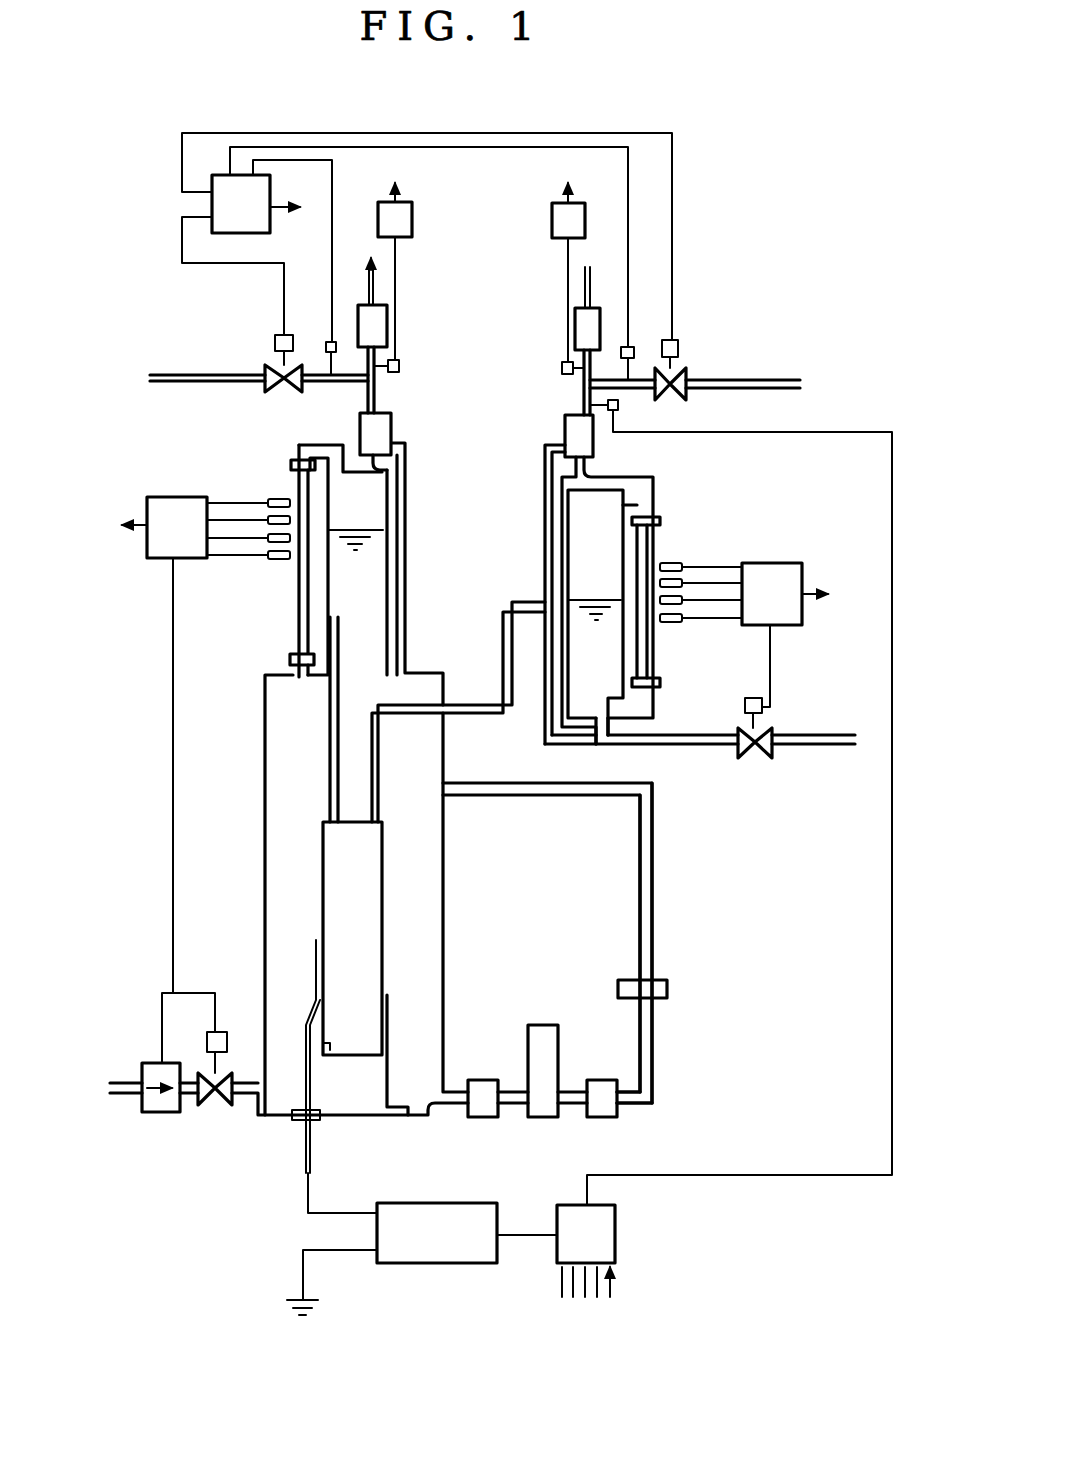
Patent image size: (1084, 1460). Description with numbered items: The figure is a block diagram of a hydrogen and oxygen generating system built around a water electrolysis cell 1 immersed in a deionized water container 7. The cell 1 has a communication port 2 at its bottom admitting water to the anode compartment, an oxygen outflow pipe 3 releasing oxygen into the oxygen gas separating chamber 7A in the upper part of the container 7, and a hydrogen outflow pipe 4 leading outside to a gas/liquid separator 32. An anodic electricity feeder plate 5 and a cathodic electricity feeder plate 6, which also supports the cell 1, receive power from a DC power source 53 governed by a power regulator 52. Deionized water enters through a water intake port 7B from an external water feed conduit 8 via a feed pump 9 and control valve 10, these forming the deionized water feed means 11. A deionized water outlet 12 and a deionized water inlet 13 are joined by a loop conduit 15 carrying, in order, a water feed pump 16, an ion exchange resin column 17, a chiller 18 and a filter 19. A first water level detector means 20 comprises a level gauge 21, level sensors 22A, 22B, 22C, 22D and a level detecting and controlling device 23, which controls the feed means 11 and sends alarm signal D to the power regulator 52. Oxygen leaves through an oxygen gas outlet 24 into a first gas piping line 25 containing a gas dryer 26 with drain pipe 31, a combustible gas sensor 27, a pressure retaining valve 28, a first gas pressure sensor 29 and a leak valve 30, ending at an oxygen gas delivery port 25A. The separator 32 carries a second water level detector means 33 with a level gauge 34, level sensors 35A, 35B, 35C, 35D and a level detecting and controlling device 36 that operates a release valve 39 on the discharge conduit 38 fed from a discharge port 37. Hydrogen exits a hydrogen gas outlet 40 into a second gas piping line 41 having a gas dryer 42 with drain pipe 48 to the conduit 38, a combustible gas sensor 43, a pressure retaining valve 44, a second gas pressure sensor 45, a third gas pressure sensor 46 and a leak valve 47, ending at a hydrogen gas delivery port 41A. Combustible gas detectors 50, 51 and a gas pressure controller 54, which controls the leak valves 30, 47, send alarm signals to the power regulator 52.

The water electrolysis cell 1 is at (360, 936).
The communication port 2 is at (324, 1050).
The oxygen outflow pipe 3 is at (330, 770).
The hydrogen outflow pipe 4 is at (380, 770).
The anodic electricity feeder plate 5 is at (310, 1003).
The cathodic electricity feeder plate 6 is at (388, 1068).
The deionized water container 7 is at (444, 925).
The oxygen gas separating chamber 7A is at (377, 578).
The water intake port 7B is at (258, 1105).
The external water feed conduit 8 is at (108, 1088).
The feed pump 9 is at (165, 1118).
The control valve 10 is at (205, 1105).
The deionized water feed means 11 is at (128, 1125).
The deionized water outlet 12 is at (428, 1118).
The deionized water inlet 13 is at (444, 785).
The loop conduit 15 is at (653, 925).
The water feed pump 16 is at (483, 1118).
The ion exchange resin column 17 is at (545, 1118).
The chiller 18 is at (602, 1118).
The filter 19 is at (667, 988).
The first water level detector means 20 is at (178, 484).
The level gauge 21 is at (300, 612).
The level sensor 22A is at (276, 497).
The level sensor 22B is at (268, 516).
The level sensor 22C is at (270, 540).
The level sensor 22D is at (276, 560).
The level detecting and controlling device 23 is at (180, 542).
The oxygen gas outlet 24 is at (395, 482).
The first gas piping line 25 is at (382, 385).
The oxygen gas delivery port 25A is at (355, 268).
The gas dryer 26 is at (392, 428).
The combustible gas sensor 27 is at (400, 362).
The pressure retaining valve 28 is at (380, 322).
The first gas pressure sensor 29 is at (330, 340).
The leak valve 30 is at (266, 368).
The drain pipe 31 is at (406, 526).
The gas/liquid separator 32 is at (608, 488).
The second water level detector means 33 is at (778, 556).
The level gauge 34 is at (648, 545).
The level sensor 35A is at (666, 562).
The level sensor 35B is at (682, 583).
The level sensor 35C is at (682, 603).
The level sensor 35D is at (668, 623).
The level detecting and controlling device 36 is at (780, 612).
The discharge port 37 is at (600, 737).
The discharge conduit 38 is at (672, 746).
The release valve 39 is at (758, 752).
The hydrogen gas outlet 40 is at (590, 482).
The second gas piping line 41 is at (580, 392).
The hydrogen gas delivery port 41A is at (588, 270).
The gas dryer 42 is at (564, 432).
The combustible gas sensor 43 is at (561, 366).
The pressure retaining valve 44 is at (600, 326).
The second gas pressure sensor 45 is at (634, 350).
The third gas pressure sensor 46 is at (618, 406).
The leak valve 47 is at (686, 372).
The drain pipe 48 is at (544, 485).
The combustible gas detector 50 is at (412, 215).
The combustible gas detector 51 is at (558, 218).
The power regulator 52 is at (612, 1240).
The DC power source 53 is at (432, 1264).
The gas pressure controller 54 is at (210, 198).